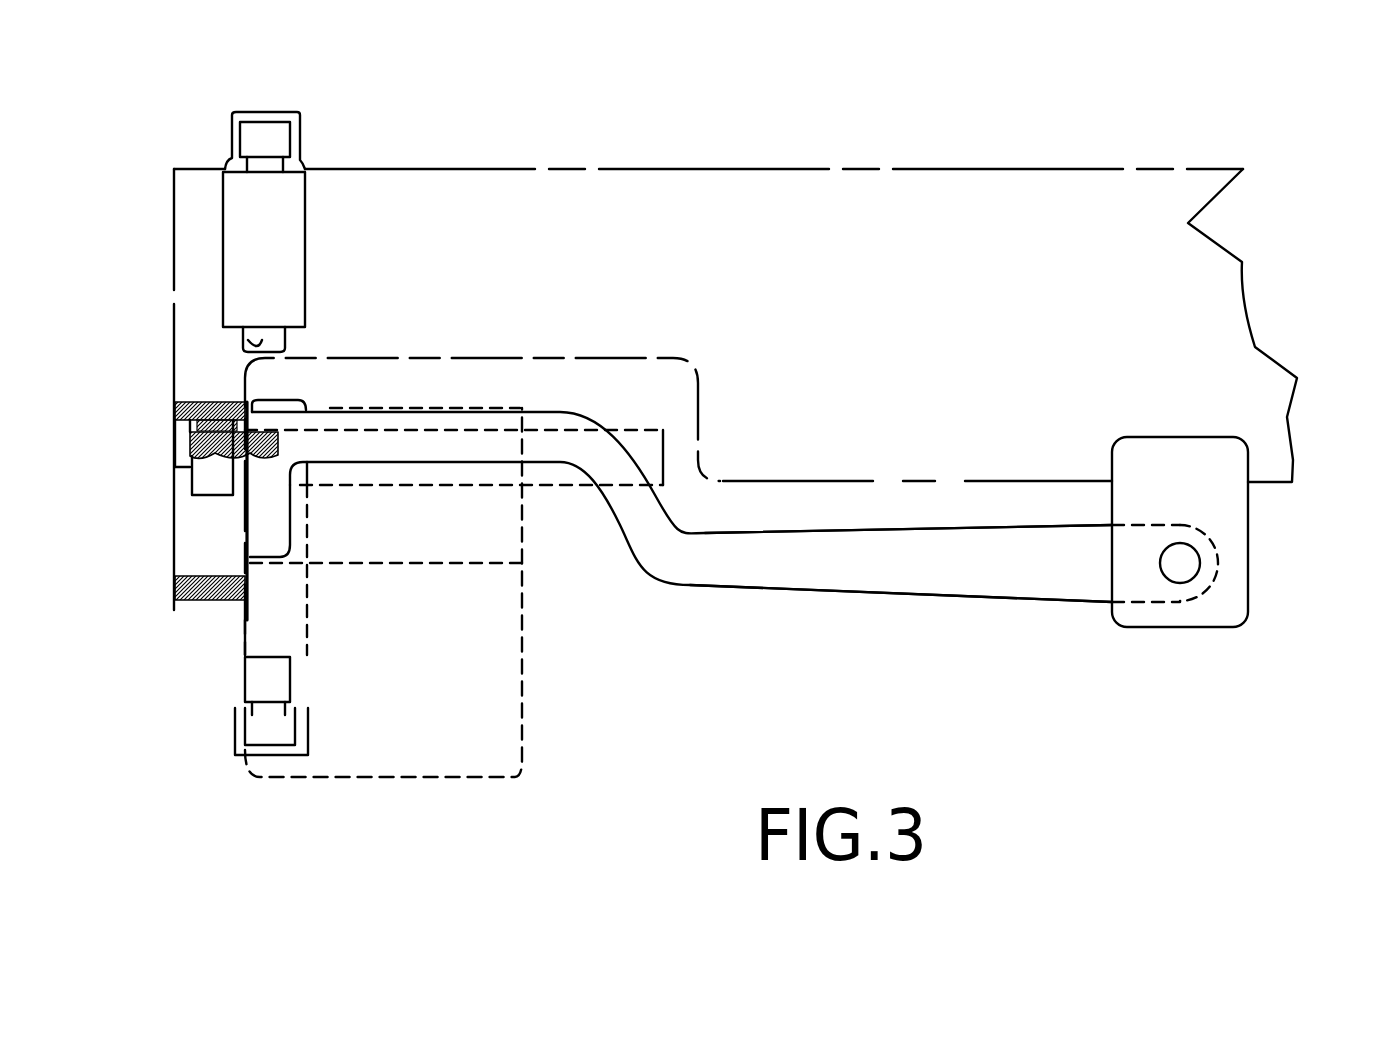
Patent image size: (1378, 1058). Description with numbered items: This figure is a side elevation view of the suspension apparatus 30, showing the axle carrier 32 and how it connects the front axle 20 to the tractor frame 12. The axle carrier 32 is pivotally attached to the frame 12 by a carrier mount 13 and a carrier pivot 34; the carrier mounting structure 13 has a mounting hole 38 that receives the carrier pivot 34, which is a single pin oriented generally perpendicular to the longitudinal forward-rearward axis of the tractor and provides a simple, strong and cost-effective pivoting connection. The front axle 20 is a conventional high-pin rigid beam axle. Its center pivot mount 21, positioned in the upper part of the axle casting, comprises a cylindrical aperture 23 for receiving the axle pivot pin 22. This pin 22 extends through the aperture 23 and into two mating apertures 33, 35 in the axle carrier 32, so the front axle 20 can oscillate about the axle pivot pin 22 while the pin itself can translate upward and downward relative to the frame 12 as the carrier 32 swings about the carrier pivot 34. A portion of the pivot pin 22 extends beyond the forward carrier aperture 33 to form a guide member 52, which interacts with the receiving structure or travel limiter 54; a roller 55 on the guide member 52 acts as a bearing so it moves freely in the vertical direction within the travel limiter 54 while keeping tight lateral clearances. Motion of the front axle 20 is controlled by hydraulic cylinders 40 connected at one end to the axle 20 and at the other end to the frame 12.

The frame 12 is at (413, 180).
The carrier mount 13 is at (1237, 497).
The front axle 20 is at (512, 692).
The center pivot mount 21 is at (512, 530).
The axle pivot pin 22 is at (653, 448).
The cylindrical aperture 23 is at (402, 488).
The suspension apparatus 30 is at (540, 760).
The axle carrier 32 is at (918, 567).
The forward carrier aperture 33 is at (263, 485).
The carrier pivot 34 is at (1180, 572).
The carrier aperture 35 is at (623, 487).
The mounting hole 38 is at (1202, 558).
The hydraulic cylinder 40 is at (223, 230).
The guide member 52 is at (187, 460).
The travel limiter 54 is at (174, 588).
The roller 55 is at (205, 477).